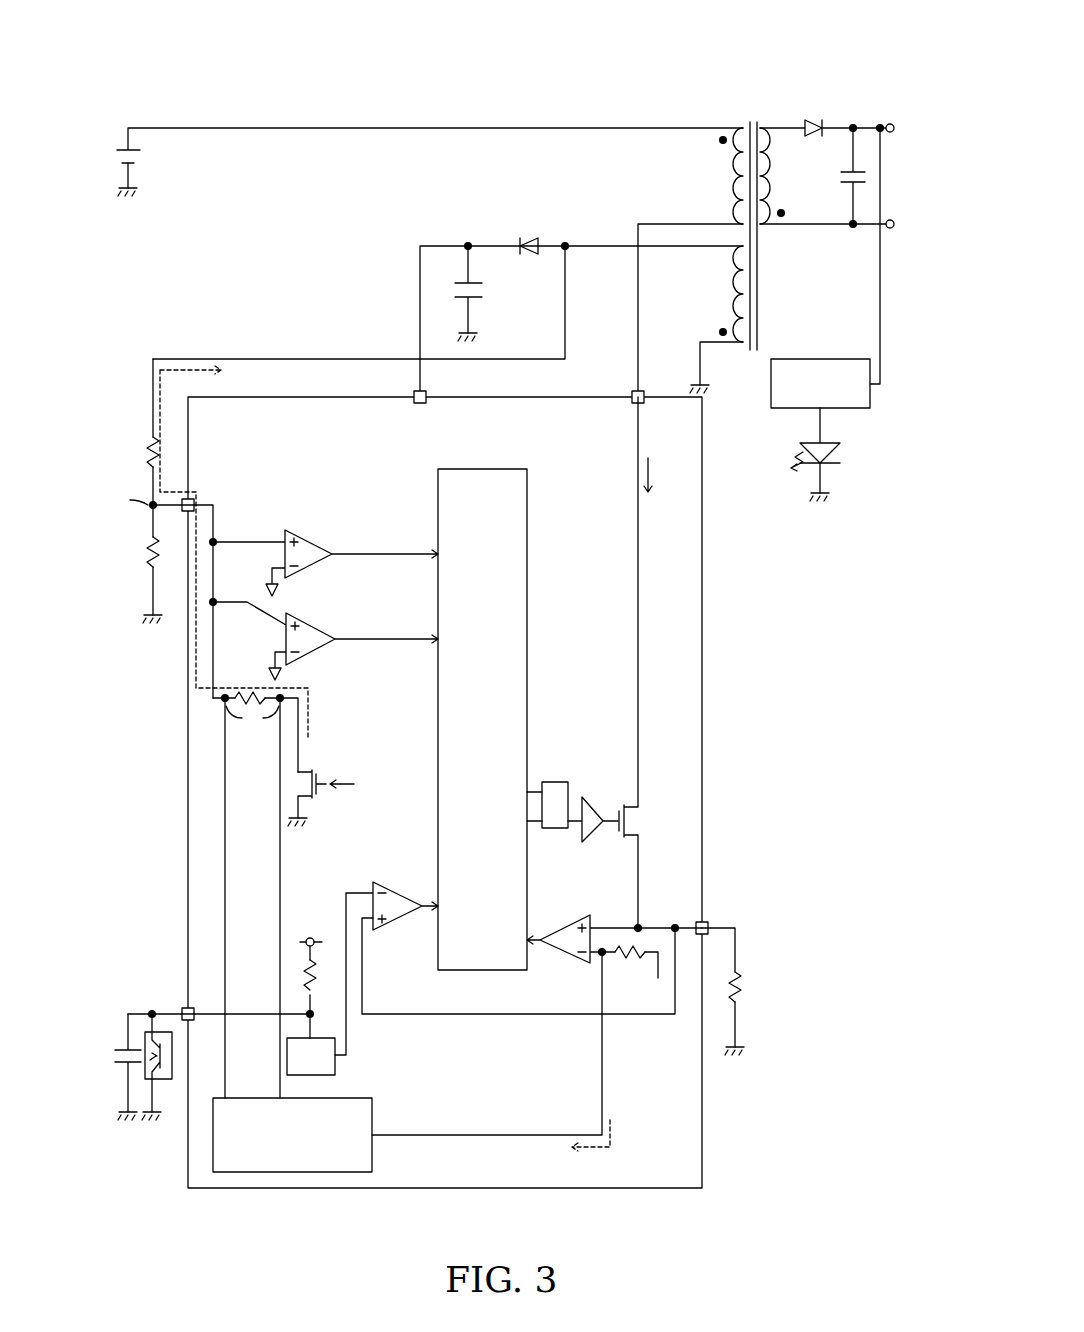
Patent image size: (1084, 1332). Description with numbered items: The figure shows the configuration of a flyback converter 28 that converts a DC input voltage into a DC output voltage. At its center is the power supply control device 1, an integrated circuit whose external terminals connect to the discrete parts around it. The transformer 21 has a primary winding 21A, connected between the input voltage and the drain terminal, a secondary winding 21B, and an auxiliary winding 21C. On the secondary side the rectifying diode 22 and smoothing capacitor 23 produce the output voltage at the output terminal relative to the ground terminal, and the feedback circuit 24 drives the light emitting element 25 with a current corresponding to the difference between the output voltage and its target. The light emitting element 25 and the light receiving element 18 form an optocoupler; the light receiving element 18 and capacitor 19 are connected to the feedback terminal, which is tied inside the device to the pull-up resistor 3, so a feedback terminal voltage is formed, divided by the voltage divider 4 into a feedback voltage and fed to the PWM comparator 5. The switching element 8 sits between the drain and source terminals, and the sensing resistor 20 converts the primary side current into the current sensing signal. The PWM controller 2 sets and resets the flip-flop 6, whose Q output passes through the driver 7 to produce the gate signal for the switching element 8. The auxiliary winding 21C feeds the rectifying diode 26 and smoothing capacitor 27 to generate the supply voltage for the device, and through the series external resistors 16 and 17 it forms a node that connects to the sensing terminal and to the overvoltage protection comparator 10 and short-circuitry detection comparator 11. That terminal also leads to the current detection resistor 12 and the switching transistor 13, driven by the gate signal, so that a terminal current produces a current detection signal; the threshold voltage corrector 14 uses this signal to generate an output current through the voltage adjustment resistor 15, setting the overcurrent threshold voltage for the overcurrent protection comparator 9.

The power supply control device 1 is at (665, 396).
The PWM controller 2 is at (515, 469).
The pull-up resistor 3 is at (318, 980).
The voltage divider 4 is at (326, 1038).
The PWM comparator 5 is at (394, 886).
The flip-flop 6 is at (569, 781).
The driver 7 is at (591, 797).
The switching element 8 is at (637, 814).
The overcurrent protection comparator 9 is at (570, 915).
The overvoltage protection comparator 10 is at (292, 536).
The short-circuitry detection comparator 11 is at (300, 622).
The current detection resistor 12 is at (255, 694).
The switching transistor 13 is at (315, 770).
The threshold voltage corrector 14 is at (362, 1098).
The voltage adjustment resistor 15 is at (628, 966).
The external resistor 16 is at (144, 447).
The external resistor 17 is at (144, 548).
The light receiving element 18 is at (176, 1080).
The capacitor 19 is at (114, 1054).
The sensing resistor 20 is at (744, 988).
The transformer 21 is at (750, 122).
The primary winding 21A is at (720, 159).
The secondary winding 21B is at (777, 198).
The auxiliary winding 21C is at (722, 322).
The rectifying diode 22 is at (812, 120).
The smoothing capacitor 23 is at (840, 176).
The feedback circuit 24 is at (790, 358).
The light emitting element 25 is at (830, 448).
The rectifying diode 26 is at (528, 238).
The smoothing capacitor 27 is at (486, 292).
The flyback converter 28 is at (846, 27).